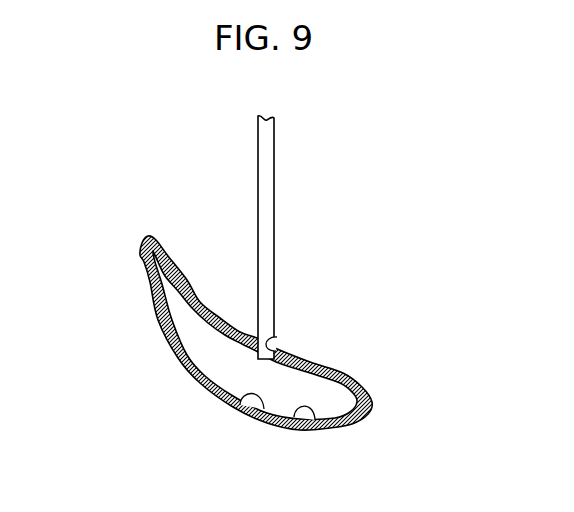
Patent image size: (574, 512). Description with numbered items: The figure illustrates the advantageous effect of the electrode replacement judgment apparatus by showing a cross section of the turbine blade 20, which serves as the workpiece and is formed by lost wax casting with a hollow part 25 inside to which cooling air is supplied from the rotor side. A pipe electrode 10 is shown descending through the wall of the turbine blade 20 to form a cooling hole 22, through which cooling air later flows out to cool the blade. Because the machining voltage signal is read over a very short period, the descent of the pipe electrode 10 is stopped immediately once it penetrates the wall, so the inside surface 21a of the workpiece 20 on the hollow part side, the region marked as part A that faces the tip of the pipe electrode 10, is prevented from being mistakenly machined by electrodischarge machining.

The pipe electrode 10 is at (277, 217).
The turbine blade 20 is at (341, 362).
The inside surface 21a is at (315, 427).
The cooling hole 22 is at (272, 343).
The hollow part 25 is at (191, 314).
The part A is at (233, 408).